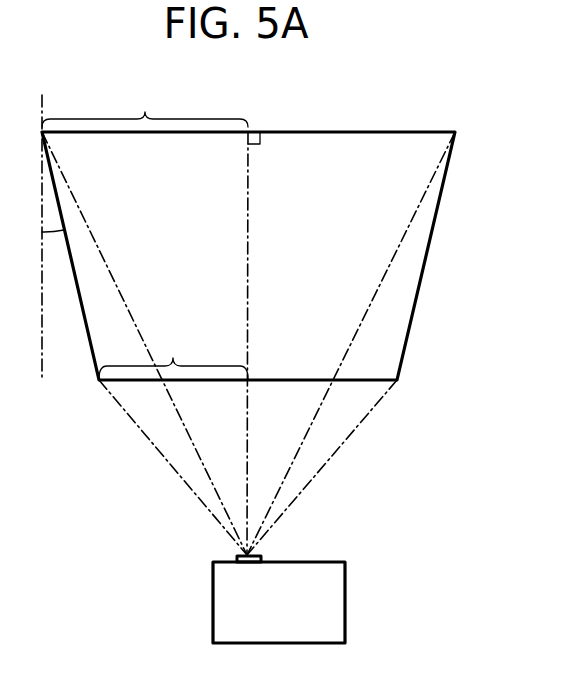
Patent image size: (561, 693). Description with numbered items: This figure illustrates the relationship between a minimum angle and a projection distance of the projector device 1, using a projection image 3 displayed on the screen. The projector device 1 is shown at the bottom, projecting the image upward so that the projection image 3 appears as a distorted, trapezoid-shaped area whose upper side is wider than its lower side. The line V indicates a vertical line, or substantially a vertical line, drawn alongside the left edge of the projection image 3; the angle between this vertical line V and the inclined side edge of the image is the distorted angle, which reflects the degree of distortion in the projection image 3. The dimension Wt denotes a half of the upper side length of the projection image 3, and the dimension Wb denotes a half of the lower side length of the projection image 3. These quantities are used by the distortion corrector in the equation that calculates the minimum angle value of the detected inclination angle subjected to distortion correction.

The projector device 1 is at (345, 602).
The projection image 3 is at (430, 241).
The vertical line V is at (40, 329).
The half of the upper side length Wt is at (145, 103).
The half of the lower side length Wb is at (173, 354).